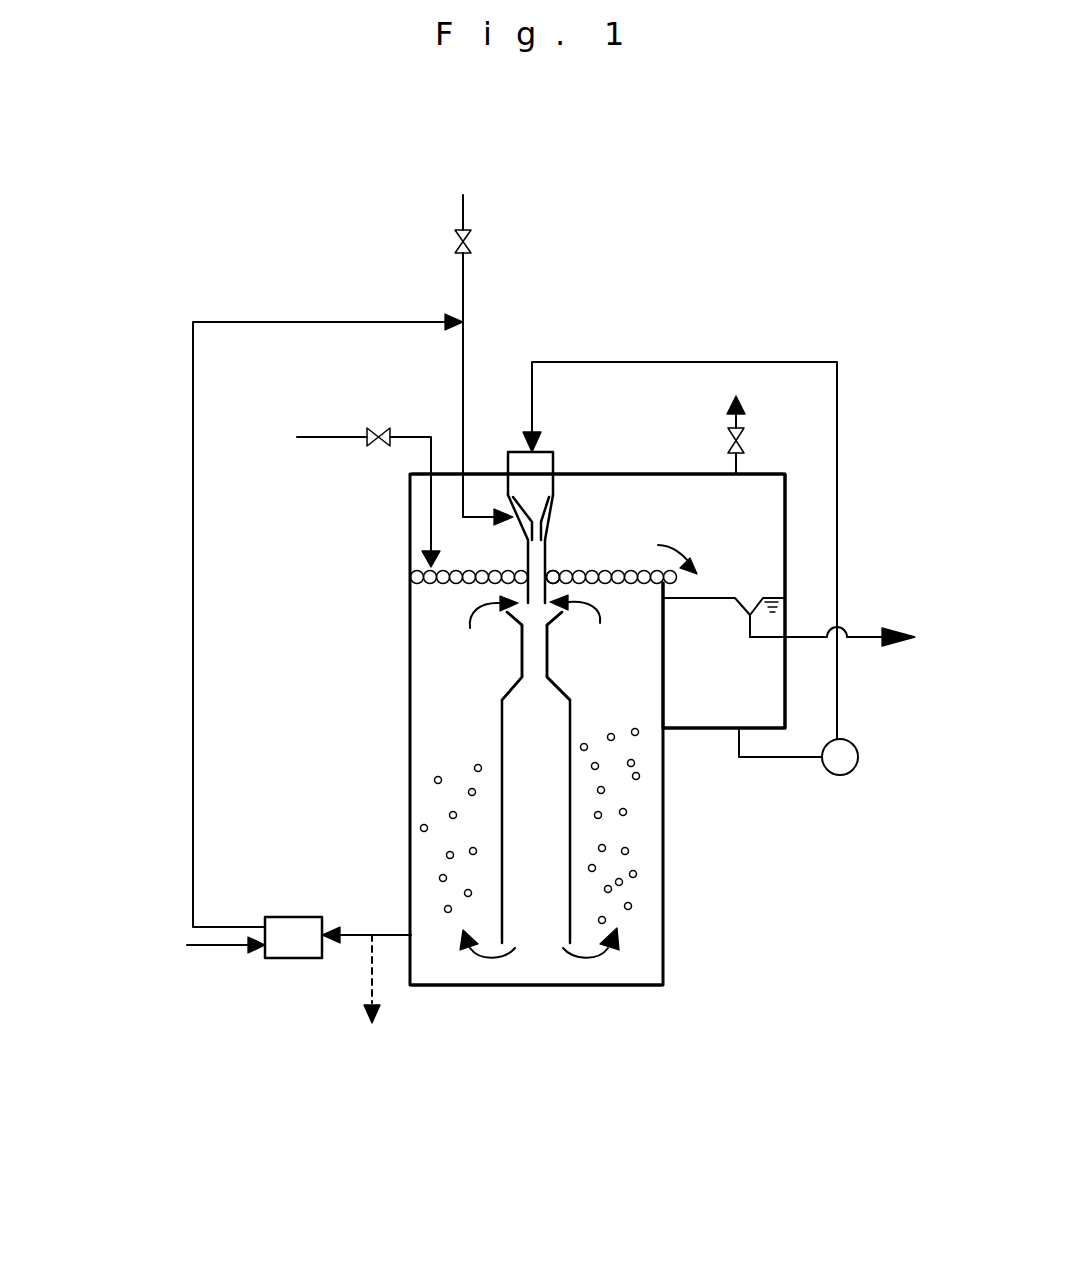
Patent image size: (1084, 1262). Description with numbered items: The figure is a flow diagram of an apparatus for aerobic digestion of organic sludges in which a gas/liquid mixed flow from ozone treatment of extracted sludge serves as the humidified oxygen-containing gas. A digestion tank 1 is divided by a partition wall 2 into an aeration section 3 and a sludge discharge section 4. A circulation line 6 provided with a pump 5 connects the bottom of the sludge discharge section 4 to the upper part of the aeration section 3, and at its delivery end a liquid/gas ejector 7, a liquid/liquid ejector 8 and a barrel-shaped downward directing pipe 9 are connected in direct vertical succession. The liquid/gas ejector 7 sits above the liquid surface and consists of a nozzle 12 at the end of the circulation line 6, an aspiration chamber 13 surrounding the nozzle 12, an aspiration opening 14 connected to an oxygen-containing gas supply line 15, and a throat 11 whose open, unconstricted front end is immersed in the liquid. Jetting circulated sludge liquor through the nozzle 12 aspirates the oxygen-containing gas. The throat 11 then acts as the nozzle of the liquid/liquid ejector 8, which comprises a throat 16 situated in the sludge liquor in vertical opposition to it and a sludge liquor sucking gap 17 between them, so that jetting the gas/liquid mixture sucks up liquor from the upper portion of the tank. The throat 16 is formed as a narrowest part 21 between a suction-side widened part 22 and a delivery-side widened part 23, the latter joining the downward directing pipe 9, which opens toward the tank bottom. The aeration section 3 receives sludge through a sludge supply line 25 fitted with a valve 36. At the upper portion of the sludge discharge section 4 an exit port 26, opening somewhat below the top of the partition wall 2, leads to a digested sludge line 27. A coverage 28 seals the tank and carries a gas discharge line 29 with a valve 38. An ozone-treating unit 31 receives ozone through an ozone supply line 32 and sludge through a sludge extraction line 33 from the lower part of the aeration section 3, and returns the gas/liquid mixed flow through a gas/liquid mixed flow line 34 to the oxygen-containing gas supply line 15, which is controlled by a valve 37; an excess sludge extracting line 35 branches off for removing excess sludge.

The digestion tank 1 is at (530, 987).
The partition wall 2 is at (662, 633).
The aeration section 3 is at (615, 960).
The sludge discharge section 4 is at (712, 713).
The pump 5 is at (838, 776).
The circulation line 6 is at (772, 360).
The liquid/gas ejector 7 is at (569, 507).
The liquid/liquid ejector 8 is at (495, 638).
The downward directing pipe 9 is at (573, 912).
The throat 11 is at (517, 590).
The nozzle 12 is at (562, 527).
The aspiration chamber 13 is at (513, 543).
The aspiration opening 14 is at (517, 520).
The oxygen-containing gas supply line 15 is at (460, 202).
The throat 16 is at (515, 650).
The sludge liquor sucking gap 17 is at (557, 580).
The narrowest part 21 is at (520, 665).
The widened part 22 is at (552, 620).
The widened part 23 is at (570, 688).
The sludge supply line 25 is at (328, 435).
The exit port 26 is at (748, 603).
The digested sludge line 27 is at (877, 646).
The coverage 28 is at (667, 470).
The gas discharge line 29 is at (738, 427).
The ozone-treating unit 31 is at (282, 960).
The ozone supply line 32 is at (213, 948).
The sludge extraction line 33 is at (360, 932).
The gas/liquid mixed flow line 34 is at (192, 755).
The excess sludge extracting line 35 is at (377, 1003).
The valve 36 is at (378, 427).
The valve 37 is at (455, 239).
The valve 38 is at (744, 442).